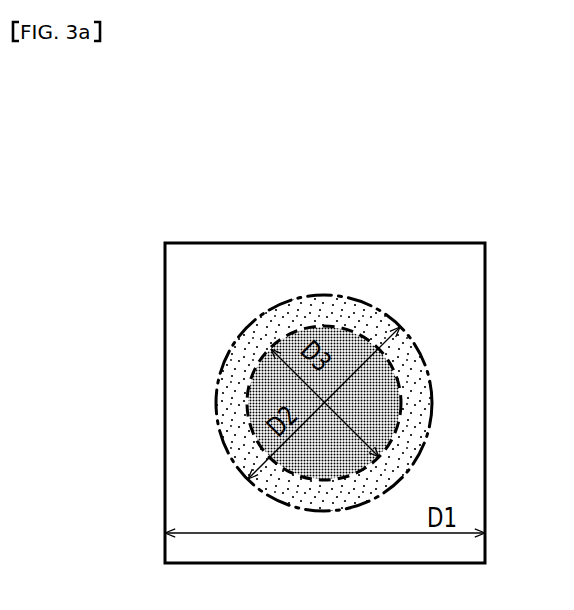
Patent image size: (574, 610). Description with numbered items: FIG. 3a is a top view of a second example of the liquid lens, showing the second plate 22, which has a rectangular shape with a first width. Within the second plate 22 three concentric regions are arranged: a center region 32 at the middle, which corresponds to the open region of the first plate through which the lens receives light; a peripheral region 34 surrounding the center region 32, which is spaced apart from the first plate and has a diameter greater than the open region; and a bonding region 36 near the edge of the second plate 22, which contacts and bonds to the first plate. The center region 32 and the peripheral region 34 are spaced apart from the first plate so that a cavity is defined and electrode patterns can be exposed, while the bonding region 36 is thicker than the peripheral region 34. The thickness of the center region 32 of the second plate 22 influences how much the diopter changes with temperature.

The second plate 22 is at (260, 203).
The center region 32 is at (303, 323).
The peripheral region 34 is at (326, 296).
The bonding region 36 is at (415, 267).